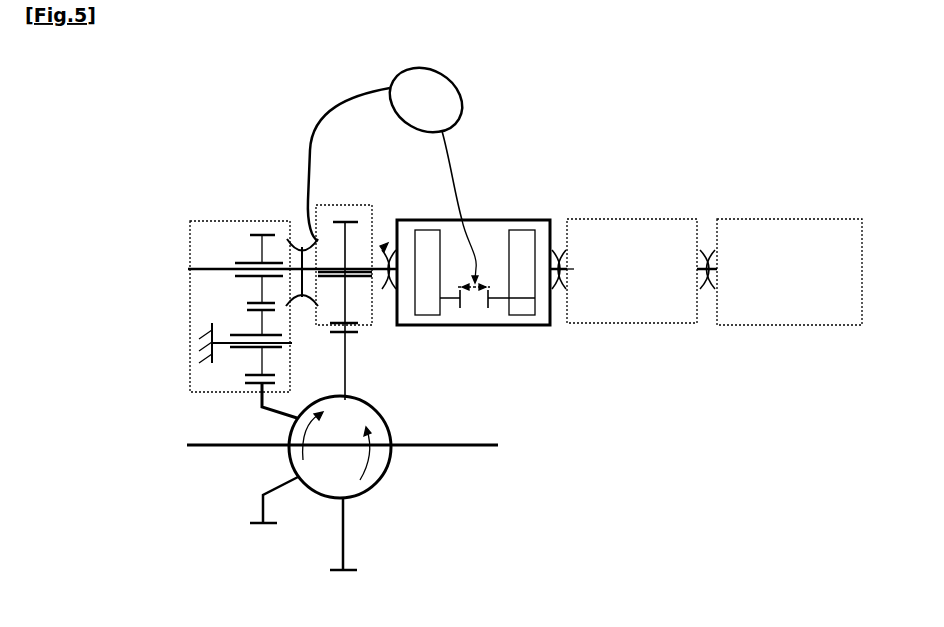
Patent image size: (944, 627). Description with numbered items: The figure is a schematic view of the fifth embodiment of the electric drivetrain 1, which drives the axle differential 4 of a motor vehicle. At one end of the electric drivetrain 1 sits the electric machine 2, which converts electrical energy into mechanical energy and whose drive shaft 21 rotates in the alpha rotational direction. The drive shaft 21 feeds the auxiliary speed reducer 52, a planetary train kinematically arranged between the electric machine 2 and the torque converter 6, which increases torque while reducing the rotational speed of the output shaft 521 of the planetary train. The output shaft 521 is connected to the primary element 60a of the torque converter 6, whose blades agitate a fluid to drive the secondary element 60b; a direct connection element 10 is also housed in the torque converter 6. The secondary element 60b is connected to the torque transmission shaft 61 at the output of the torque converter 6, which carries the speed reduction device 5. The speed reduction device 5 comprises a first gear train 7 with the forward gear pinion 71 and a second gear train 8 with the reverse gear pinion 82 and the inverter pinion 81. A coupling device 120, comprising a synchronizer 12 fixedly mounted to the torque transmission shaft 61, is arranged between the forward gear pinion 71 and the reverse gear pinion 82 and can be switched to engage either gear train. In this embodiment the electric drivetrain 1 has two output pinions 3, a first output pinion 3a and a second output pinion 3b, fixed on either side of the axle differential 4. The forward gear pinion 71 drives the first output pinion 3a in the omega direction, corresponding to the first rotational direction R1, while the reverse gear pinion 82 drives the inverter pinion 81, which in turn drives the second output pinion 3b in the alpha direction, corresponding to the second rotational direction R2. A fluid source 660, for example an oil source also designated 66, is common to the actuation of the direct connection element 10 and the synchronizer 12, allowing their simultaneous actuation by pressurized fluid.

The electric drivetrain 1 is at (103, 226).
The electric machine 2 is at (828, 305).
The output pinion 3 is at (277, 412).
The first output pinion 3a is at (355, 380).
The second output pinion 3b is at (267, 412).
The axle differential 4 is at (380, 478).
The speed reduction device 5 is at (182, 217).
The torque converter 6 is at (482, 220).
The first gear train 7 is at (336, 218).
The second gear train 8 is at (233, 221).
The direct connection element 10 is at (496, 268).
The synchronizer 12 is at (282, 221).
The coupling device 120 is at (300, 243).
The drive shaft 21 is at (712, 256).
The auxiliary speed reducer 52 is at (650, 293).
The output shaft of the planetary train 521 is at (568, 272).
The primary element 60a is at (525, 308).
The secondary element 60b is at (427, 308).
The torque transmission shaft 61 is at (374, 236).
The fluid source 66 is at (442, 148).
The fluid source 660 is at (460, 102).
The forward gear pinion 71 is at (355, 222).
The inverter pinion 81 is at (262, 357).
The reverse gear pinion 82 is at (262, 248).
The first rotational direction R1 is at (373, 457).
The second rotational direction R2 is at (290, 447).